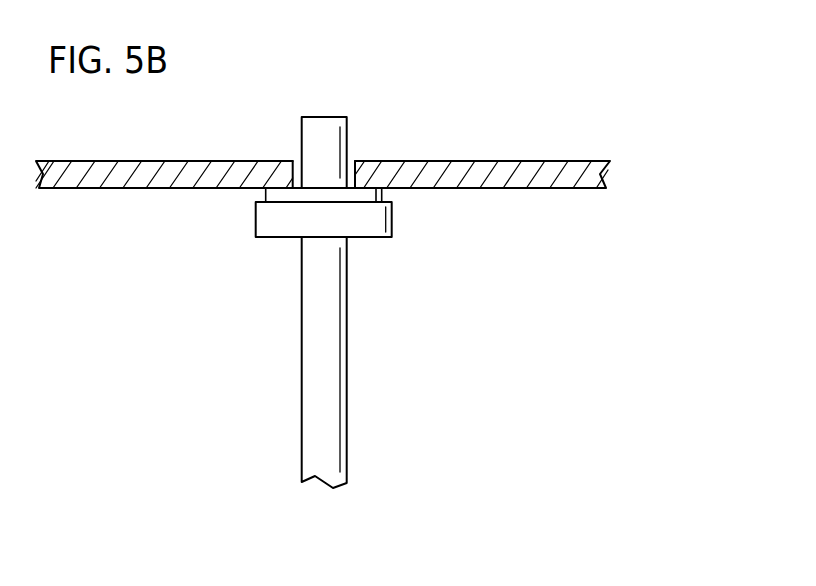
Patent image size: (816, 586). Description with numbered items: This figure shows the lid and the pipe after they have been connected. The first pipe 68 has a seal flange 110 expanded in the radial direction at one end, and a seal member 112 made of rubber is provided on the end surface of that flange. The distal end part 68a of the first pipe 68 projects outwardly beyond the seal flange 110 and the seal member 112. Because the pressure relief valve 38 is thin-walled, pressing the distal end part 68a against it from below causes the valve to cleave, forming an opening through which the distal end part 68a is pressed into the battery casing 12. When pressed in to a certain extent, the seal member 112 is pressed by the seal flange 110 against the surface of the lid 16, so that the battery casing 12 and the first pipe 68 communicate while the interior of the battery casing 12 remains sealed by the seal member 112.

The lid 16 is at (323, 201).
The battery casing 12 is at (149, 183).
The pressure relief valve 38 is at (298, 158).
The first pipe 68 is at (359, 278).
The distal end part 68a is at (332, 123).
The seal flange 110 is at (400, 225).
The seal member 112 is at (360, 196).